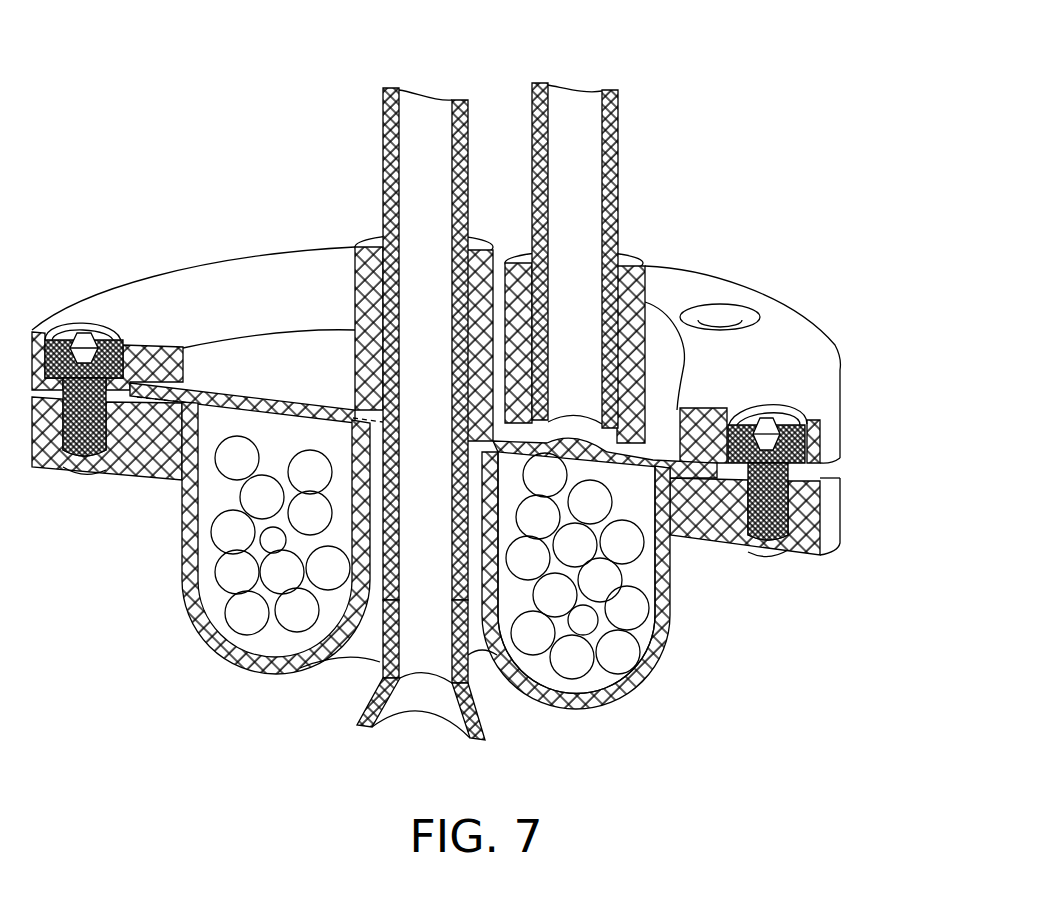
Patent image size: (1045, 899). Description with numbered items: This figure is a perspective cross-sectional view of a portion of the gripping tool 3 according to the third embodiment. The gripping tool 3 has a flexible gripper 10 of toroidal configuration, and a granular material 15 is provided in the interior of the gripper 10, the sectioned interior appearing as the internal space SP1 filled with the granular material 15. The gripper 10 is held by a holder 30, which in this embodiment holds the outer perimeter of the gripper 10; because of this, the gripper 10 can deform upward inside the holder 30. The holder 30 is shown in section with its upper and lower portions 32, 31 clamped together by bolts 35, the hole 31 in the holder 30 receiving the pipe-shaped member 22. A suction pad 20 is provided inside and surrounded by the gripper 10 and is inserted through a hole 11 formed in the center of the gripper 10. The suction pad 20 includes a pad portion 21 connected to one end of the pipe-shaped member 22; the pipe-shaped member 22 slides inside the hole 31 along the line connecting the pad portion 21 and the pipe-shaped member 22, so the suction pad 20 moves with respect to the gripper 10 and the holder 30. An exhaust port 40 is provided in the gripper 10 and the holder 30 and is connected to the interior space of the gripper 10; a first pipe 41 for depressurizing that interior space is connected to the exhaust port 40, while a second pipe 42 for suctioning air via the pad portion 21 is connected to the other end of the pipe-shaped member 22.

The gripping tool 3 is at (766, 111).
The gripper 10 is at (187, 600).
The hole 11 is at (357, 330).
The granular material 15 is at (228, 531).
The suction pad 20 is at (342, 691).
The pad portion 21 is at (358, 702).
The pipe-shaped member 22 is at (377, 663).
The holder 30 is at (490, 439).
The hole 31 is at (903, 413).
The upper flange plate 32 is at (840, 420).
The bolt 35 is at (758, 528).
The exhaust port 40 is at (645, 300).
The first pipe 41 is at (620, 124).
The second pipe 42 is at (382, 118).
The internal space SP1 is at (591, 678).